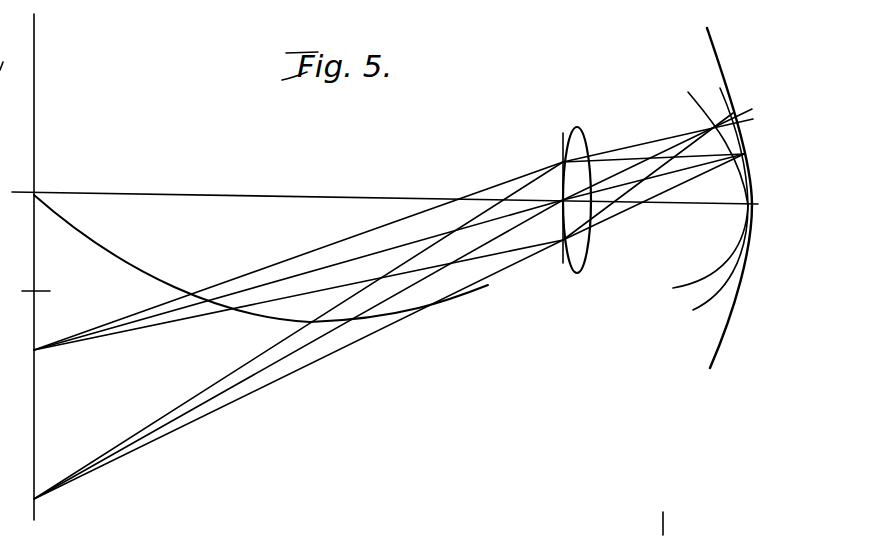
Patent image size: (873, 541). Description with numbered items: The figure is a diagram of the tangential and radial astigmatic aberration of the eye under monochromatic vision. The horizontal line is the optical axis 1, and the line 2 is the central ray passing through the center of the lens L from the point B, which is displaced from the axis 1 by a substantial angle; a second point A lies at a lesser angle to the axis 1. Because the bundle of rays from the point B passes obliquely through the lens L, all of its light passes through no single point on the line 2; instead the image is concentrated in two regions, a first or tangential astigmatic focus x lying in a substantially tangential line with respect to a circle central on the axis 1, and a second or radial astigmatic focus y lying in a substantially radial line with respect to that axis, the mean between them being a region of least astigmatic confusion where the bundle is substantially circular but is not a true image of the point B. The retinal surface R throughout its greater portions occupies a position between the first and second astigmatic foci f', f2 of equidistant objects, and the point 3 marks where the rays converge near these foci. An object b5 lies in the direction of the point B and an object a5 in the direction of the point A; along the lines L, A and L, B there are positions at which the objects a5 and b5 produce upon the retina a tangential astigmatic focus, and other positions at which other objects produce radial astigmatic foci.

The optical axis 1 is at (704, 206).
The central ray 2 is at (34, 500).
The focal point of converging rays 3 is at (660, 174).
The point A is at (36, 352).
The point B is at (36, 500).
The lens L is at (587, 224).
The object a5 is at (203, 303).
The object b5 is at (363, 318).
The second astigmatic focus f2 is at (710, 366).
The first astigmatic focus f' is at (698, 249).
The retinal surface R is at (700, 303).
The tangential astigmatic focus x is at (681, 108).
The radial astigmatic focus y is at (728, 115).